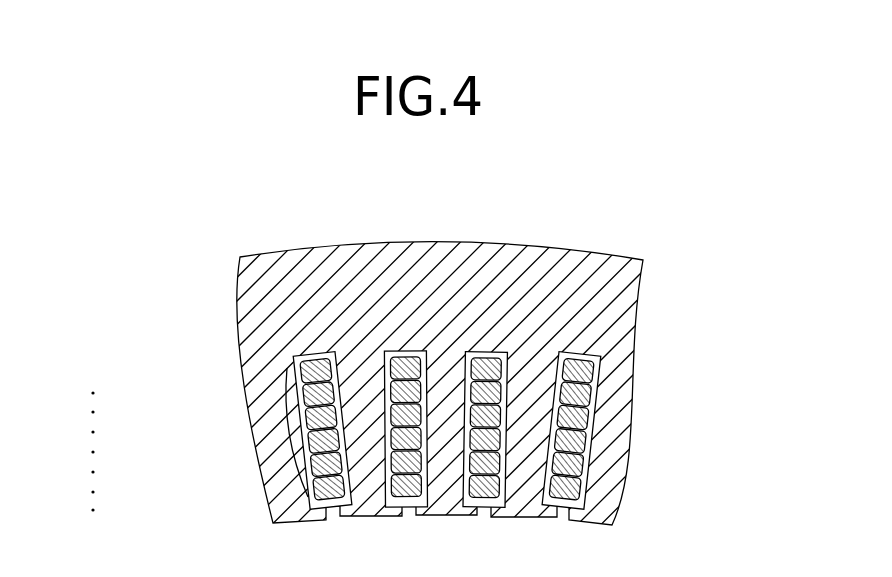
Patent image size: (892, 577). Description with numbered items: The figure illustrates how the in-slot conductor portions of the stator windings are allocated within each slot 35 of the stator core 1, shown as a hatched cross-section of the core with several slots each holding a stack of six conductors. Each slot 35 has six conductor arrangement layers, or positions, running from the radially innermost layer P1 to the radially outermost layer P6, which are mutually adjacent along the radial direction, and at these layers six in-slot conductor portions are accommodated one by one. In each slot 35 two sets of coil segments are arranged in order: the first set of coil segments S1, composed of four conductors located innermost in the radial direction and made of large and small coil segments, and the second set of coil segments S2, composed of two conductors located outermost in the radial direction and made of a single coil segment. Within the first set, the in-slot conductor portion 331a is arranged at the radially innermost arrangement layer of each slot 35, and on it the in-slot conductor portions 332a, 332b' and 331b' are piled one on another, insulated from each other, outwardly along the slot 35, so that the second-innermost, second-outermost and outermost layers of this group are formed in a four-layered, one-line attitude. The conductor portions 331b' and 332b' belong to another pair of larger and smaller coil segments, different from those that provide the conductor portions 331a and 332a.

The stator core 1 is at (605, 290).
The slot 35 is at (405, 351).
The in-slot conductor portion 331b' is at (656, 396).
The in-slot conductor portion 332b' is at (656, 428).
The in-slot conductor portion 332a is at (575, 468).
The in-slot conductor portion 331a is at (575, 494).
The conductor arrangement layer P6 is at (273, 372).
The second set of coil segments S2 is at (269, 387).
The first set of coil segments S1 is at (272, 450).
The conductor arrangement layer P1 is at (287, 496).